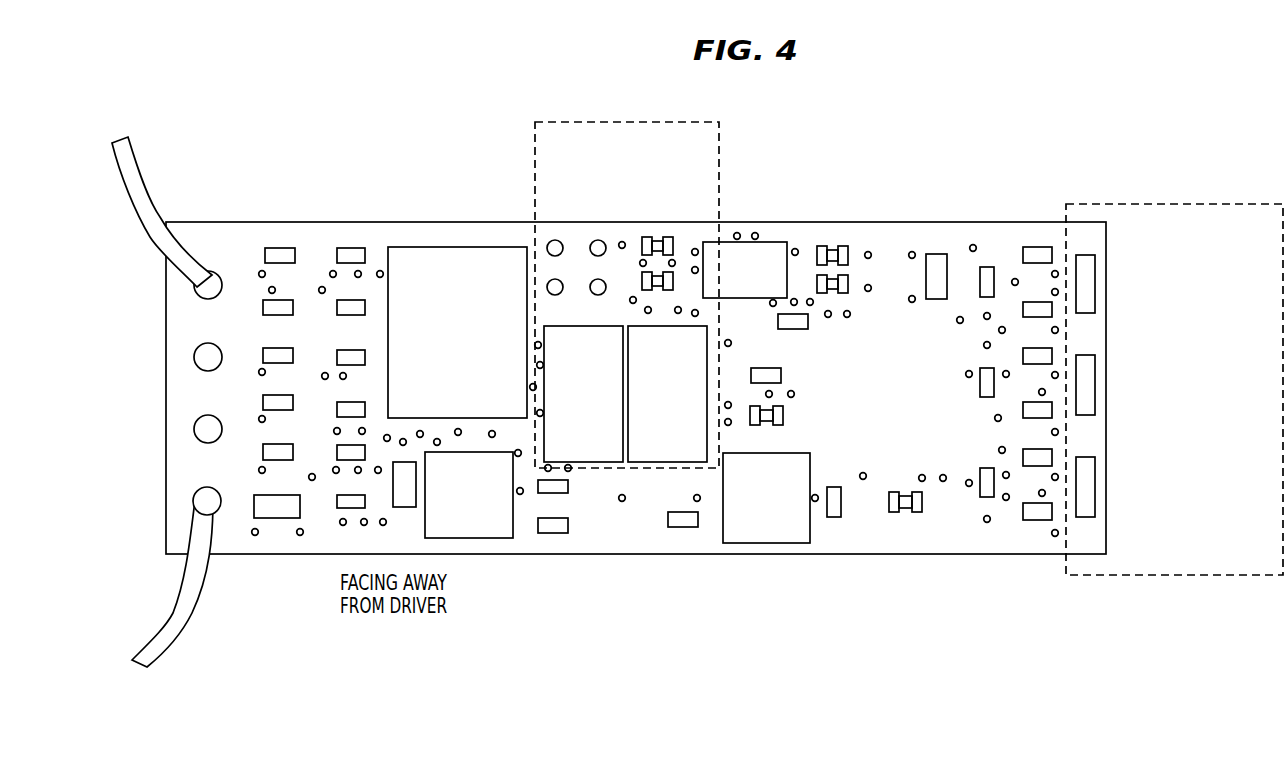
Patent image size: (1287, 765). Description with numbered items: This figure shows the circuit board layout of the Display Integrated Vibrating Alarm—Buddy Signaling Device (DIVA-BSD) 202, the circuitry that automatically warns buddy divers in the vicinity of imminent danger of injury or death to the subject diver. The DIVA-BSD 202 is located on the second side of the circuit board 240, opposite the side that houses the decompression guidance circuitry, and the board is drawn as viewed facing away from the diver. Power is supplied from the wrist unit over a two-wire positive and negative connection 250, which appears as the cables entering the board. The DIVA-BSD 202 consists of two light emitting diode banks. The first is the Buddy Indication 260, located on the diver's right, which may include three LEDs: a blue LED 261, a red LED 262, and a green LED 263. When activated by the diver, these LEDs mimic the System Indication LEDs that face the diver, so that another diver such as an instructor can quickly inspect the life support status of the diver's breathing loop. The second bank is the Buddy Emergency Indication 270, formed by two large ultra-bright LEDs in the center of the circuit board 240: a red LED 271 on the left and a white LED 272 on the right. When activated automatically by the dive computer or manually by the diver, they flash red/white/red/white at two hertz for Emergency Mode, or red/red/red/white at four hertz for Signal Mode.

The Display Integrated Vibrating Alarm—Buddy Signaling Device (DIVA-BSD) 202 is at (636, 432).
The circuit board 240 is at (742, 555).
The 2 wire connection 250 is at (137, 192).
The Buddy Indication 260 is at (1180, 575).
The Blue LED 261 is at (1083, 483).
The Red LED 262 is at (1083, 278).
The Green LED 263 is at (1083, 382).
The Buddy Emergency Indication 270 is at (632, 280).
The Red LED 271 is at (580, 350).
The White LED 272 is at (688, 350).